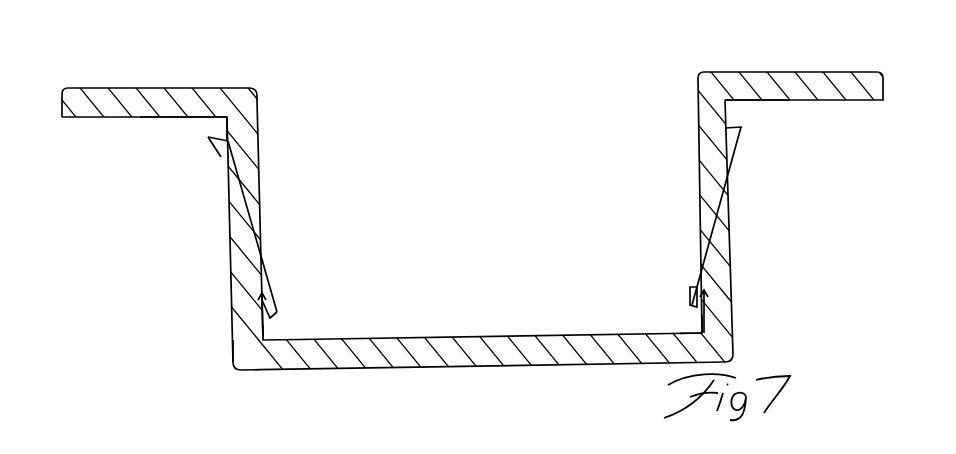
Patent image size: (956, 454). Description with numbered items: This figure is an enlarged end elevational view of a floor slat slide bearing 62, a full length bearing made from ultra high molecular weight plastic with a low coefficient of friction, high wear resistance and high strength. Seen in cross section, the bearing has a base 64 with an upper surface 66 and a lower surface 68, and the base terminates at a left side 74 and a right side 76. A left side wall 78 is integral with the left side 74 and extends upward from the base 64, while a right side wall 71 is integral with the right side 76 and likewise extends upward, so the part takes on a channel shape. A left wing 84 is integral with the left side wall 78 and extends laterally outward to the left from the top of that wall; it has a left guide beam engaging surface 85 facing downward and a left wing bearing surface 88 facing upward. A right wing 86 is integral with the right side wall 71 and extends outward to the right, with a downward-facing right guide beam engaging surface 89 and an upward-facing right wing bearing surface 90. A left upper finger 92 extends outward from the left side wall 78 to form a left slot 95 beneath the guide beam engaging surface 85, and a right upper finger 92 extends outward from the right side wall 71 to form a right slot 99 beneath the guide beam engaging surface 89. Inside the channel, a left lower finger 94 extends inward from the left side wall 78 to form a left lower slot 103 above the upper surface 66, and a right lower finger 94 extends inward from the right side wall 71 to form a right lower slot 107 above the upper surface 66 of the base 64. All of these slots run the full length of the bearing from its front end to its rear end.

The slide bearing 62 is at (695, 105).
The base 64 is at (470, 362).
The upper surface 66 is at (447, 338).
The lower surface 68 is at (305, 371).
The right side wall 71 is at (731, 237).
The left side 74 is at (268, 333).
The right side 76 is at (697, 327).
The left side wall 78 is at (228, 262).
The left wing 84 is at (61, 112).
The left guide beam engaging surface 85 is at (112, 118).
The right wing 86 is at (885, 82).
The left wing bearing surface 88 is at (130, 88).
The right guide beam engaging surface 89 is at (877, 103).
The right wing bearing surface 90 is at (773, 72).
The upper finger 92 is at (208, 140).
The lower finger 94 is at (281, 312).
The left slot 95 is at (187, 132).
The right slot 99 is at (752, 117).
The left lower slot 103 is at (292, 320).
The right lower slot 107 is at (667, 307).